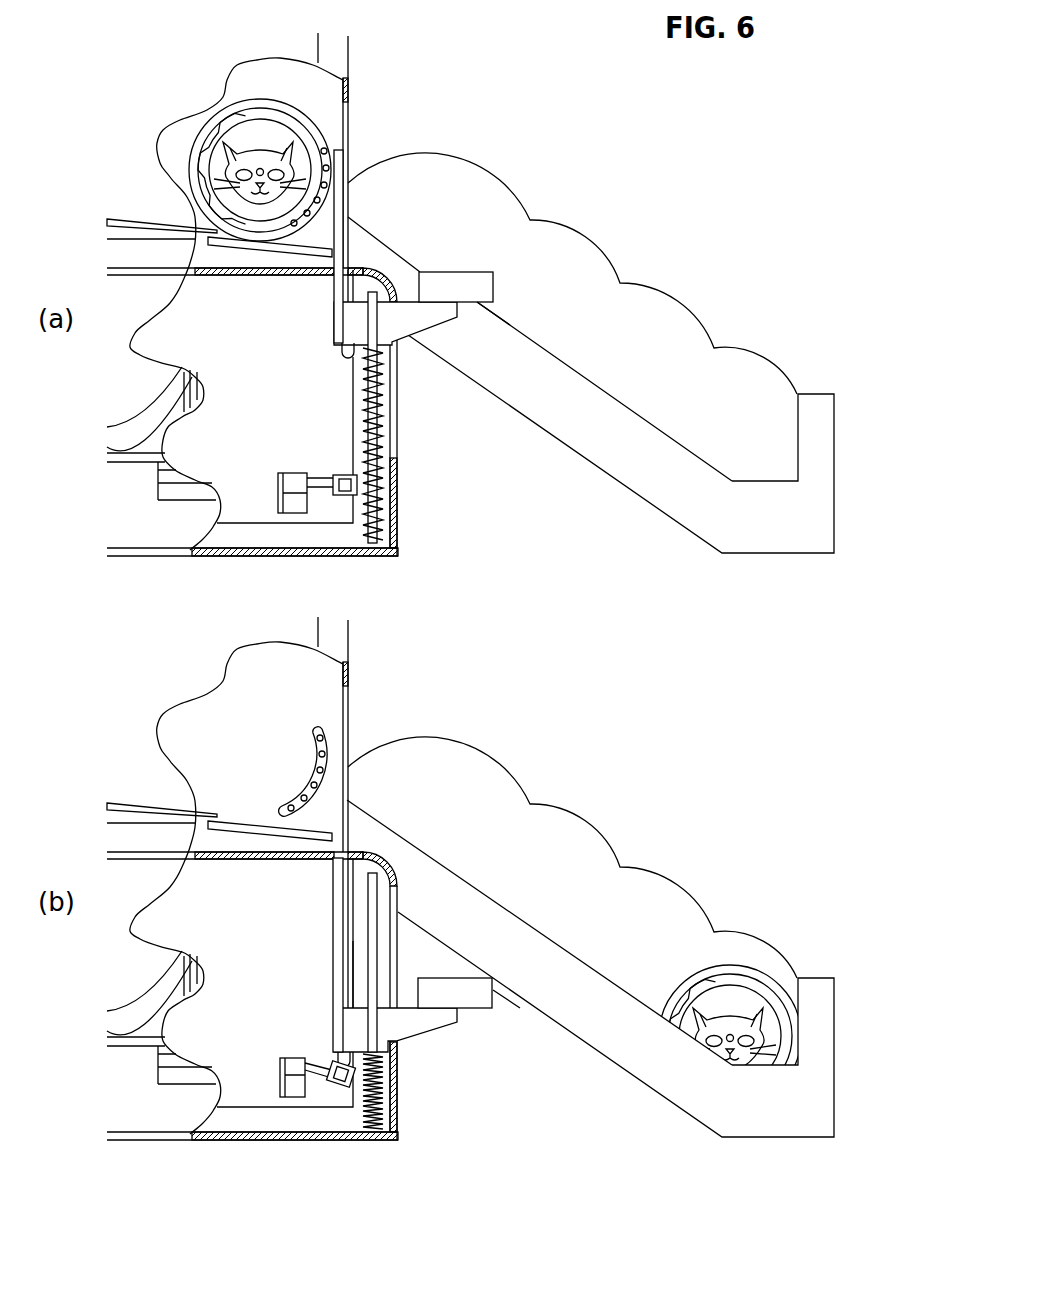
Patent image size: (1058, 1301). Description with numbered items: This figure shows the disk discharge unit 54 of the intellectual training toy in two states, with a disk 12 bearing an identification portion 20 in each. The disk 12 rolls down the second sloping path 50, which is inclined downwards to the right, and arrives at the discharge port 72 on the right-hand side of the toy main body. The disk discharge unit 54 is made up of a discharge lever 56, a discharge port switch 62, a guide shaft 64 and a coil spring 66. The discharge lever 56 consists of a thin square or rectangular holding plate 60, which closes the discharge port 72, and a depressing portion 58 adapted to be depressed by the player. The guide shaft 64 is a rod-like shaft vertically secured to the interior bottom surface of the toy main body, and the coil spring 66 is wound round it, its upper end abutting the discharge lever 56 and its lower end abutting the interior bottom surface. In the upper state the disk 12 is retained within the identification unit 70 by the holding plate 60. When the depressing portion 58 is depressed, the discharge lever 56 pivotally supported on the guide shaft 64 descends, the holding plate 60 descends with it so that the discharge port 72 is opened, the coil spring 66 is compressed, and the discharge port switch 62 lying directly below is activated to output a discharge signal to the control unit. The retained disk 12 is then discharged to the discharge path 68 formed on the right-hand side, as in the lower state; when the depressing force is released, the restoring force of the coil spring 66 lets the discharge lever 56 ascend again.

The disk 12 is at (252, 138).
The identification portion 20 is at (217, 132).
The second sloping path 50 is at (123, 215).
The disk discharge unit 54 is at (466, 239).
The discharge lever 56 is at (500, 282).
The depressing portion 58 is at (473, 286).
The holding plate 60 is at (337, 162).
The discharge port switch 62 is at (293, 503).
The guide shaft 64 is at (373, 318).
The coil spring 66 is at (380, 425).
The discharge path 68 is at (652, 357).
The identification unit 70 is at (327, 147).
The discharge port 72 is at (345, 173).